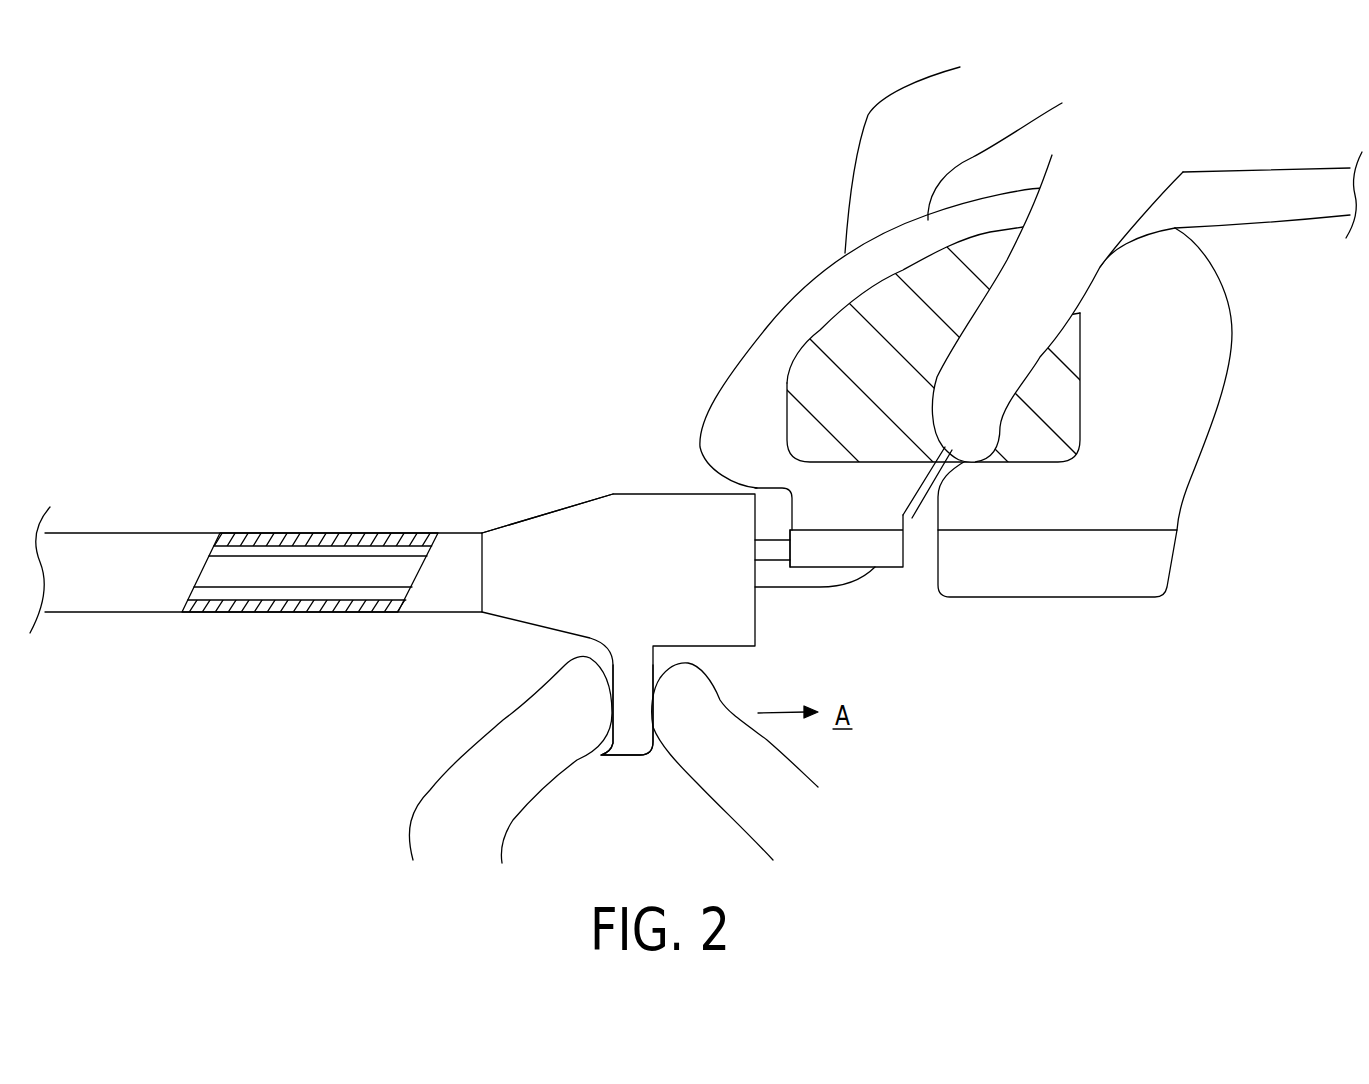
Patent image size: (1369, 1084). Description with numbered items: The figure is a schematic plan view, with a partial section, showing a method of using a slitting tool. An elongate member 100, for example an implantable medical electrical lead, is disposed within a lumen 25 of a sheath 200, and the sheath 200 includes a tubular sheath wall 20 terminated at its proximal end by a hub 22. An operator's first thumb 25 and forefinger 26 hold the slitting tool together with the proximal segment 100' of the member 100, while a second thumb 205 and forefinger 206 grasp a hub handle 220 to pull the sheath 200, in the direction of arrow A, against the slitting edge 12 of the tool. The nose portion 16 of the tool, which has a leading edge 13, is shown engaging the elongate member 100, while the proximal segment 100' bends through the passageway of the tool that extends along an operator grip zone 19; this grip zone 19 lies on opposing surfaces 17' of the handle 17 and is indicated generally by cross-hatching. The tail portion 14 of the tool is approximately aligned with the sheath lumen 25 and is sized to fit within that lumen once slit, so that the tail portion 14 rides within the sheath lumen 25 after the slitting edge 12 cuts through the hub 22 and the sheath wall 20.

The sheath 200 is at (330, 428).
The tubular sheath wall 20 is at (262, 530).
The lumen 25 is at (323, 590).
The elongate member 100 is at (516, 607).
The hub 22 is at (533, 535).
The hub handle 220 is at (627, 740).
The forefinger 206 is at (520, 747).
The thumb 205 is at (703, 755).
The slitting edge 12 is at (792, 513).
The leading edge 13 is at (795, 558).
The nose portion 16 is at (828, 545).
The forefinger 26 is at (865, 220).
The opposing surfaces 17' is at (872, 338).
The operator grip zone 19 is at (897, 381).
The handle portion 17 is at (1112, 379).
The tail portion 14 is at (1117, 580).
The proximal segment 100' is at (1132, 381).